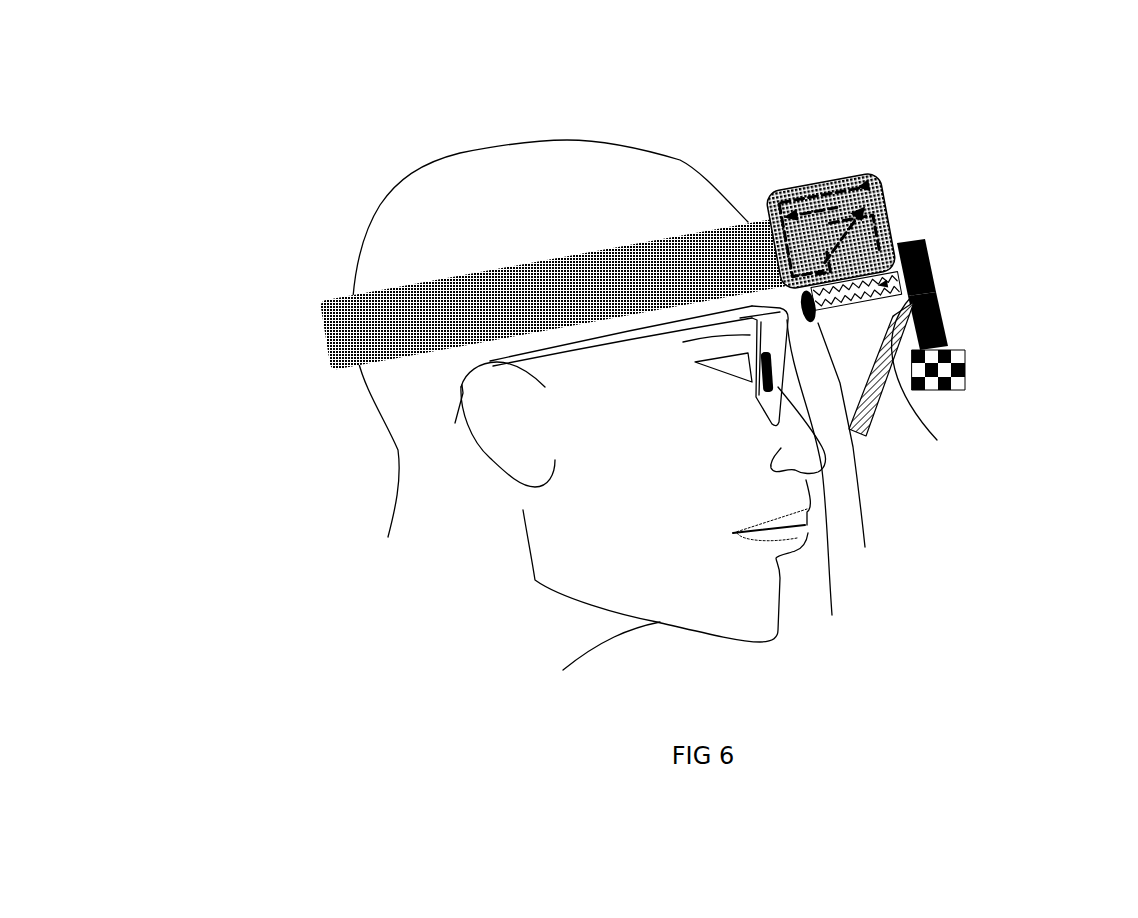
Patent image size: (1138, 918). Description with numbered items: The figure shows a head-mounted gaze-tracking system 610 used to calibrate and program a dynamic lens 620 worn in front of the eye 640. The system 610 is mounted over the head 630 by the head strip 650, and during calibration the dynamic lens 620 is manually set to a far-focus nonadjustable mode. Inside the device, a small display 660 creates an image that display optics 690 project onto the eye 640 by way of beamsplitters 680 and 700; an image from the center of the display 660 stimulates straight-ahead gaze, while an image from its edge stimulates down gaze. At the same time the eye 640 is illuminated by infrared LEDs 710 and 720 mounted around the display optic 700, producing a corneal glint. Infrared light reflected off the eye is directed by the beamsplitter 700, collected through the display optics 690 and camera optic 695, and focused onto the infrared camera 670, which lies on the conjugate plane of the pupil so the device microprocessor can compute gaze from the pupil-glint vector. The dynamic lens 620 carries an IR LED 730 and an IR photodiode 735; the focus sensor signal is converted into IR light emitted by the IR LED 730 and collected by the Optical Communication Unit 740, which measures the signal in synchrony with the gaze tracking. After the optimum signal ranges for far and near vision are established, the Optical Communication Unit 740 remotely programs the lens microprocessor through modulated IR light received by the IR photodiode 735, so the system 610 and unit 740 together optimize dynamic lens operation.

The head-mounted system 610 is at (800, 187).
The dynamic lens 620 is at (759, 411).
The head 630 is at (462, 203).
The eye 640 is at (724, 371).
The head strip 650 is at (320, 333).
The display 660 is at (773, 187).
The infrared camera 670 is at (837, 177).
The beamsplitter 680 is at (895, 205).
The display optics 690 is at (927, 270).
The camera optic 695 is at (872, 168).
The beamsplitter 700 is at (944, 333).
The infrared LED 710 is at (872, 430).
The infrared LED 720 is at (934, 379).
The IR LED 730 is at (854, 449).
The IR photodiode 735 is at (821, 481).
The Optical Communication Unit 740 is at (962, 368).